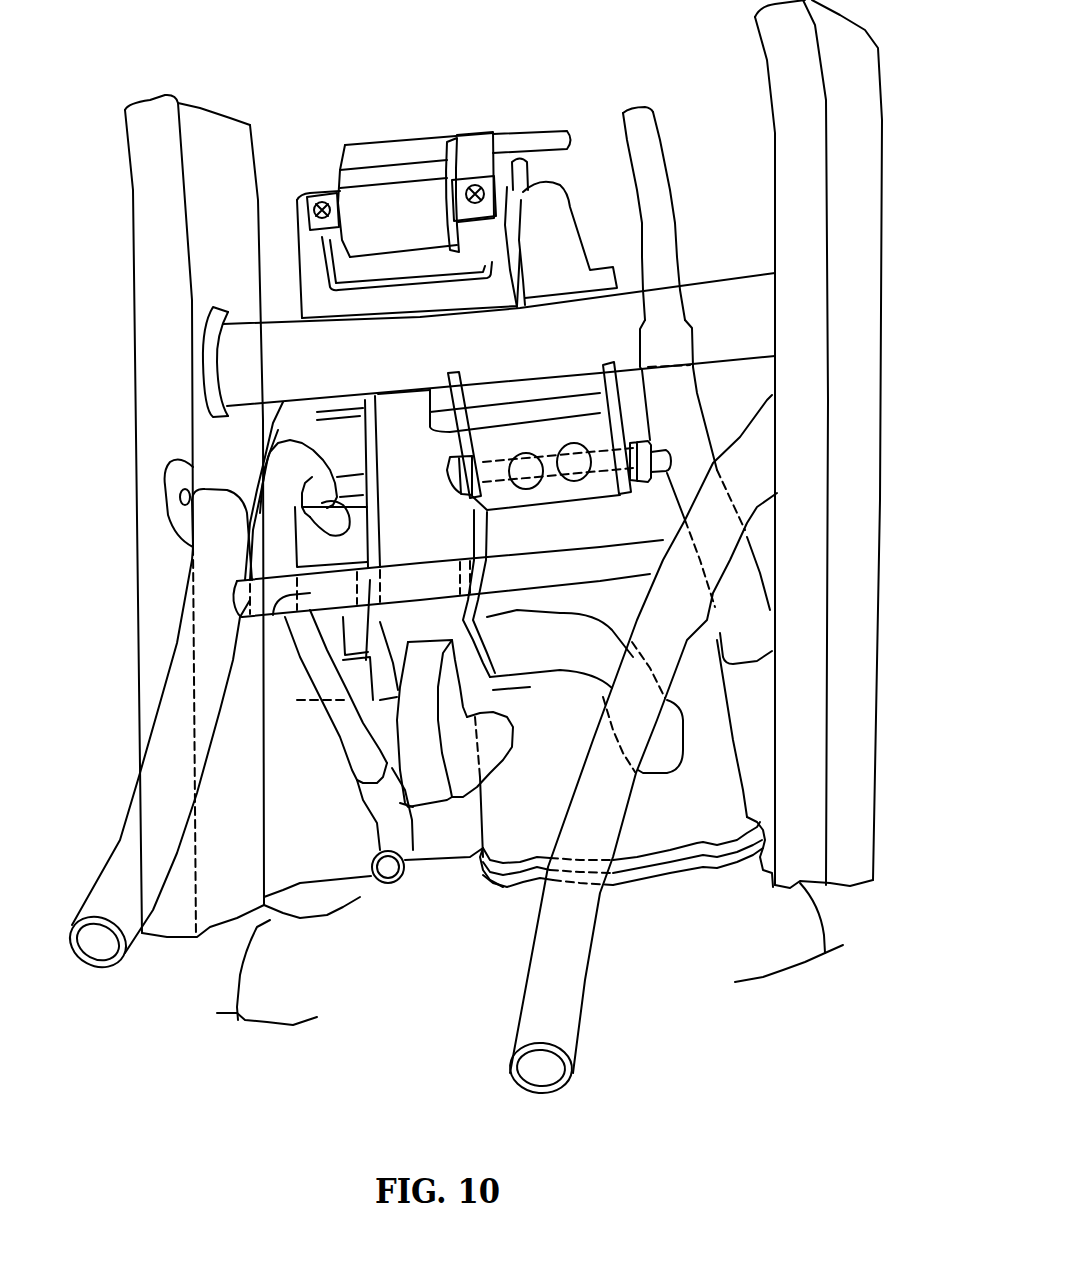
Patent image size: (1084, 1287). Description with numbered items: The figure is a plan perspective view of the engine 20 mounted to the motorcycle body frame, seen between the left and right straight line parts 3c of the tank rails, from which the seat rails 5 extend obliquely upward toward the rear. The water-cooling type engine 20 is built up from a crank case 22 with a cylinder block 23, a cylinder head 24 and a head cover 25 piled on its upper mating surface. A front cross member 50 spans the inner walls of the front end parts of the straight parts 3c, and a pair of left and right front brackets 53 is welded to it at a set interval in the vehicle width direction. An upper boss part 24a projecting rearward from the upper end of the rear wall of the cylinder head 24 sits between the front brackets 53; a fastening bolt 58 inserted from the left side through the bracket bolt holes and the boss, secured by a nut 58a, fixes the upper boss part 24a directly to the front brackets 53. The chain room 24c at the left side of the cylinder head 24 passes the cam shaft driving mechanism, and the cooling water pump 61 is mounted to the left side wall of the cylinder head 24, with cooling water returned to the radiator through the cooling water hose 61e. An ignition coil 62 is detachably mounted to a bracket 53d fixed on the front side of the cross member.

The straight line part 3c is at (873, 230).
The seat rail 5 is at (114, 822).
The engine 20 is at (742, 709).
The crank case 22 is at (807, 932).
The cylinder block 23 is at (740, 767).
The cylinder head 24 is at (653, 523).
The upper boss part 24a is at (574, 494).
The chain room 24c is at (404, 412).
The head cover 25 is at (630, 377).
The front cross member 50 is at (733, 270).
The front bracket 53 is at (470, 410).
The bracket 53d is at (295, 238).
The fastening bolt 58 is at (447, 483).
The nut 58a is at (660, 430).
The cooling water pump 61 is at (340, 433).
The cooling water hose 61e is at (660, 145).
The ignition coil 62 is at (392, 153).